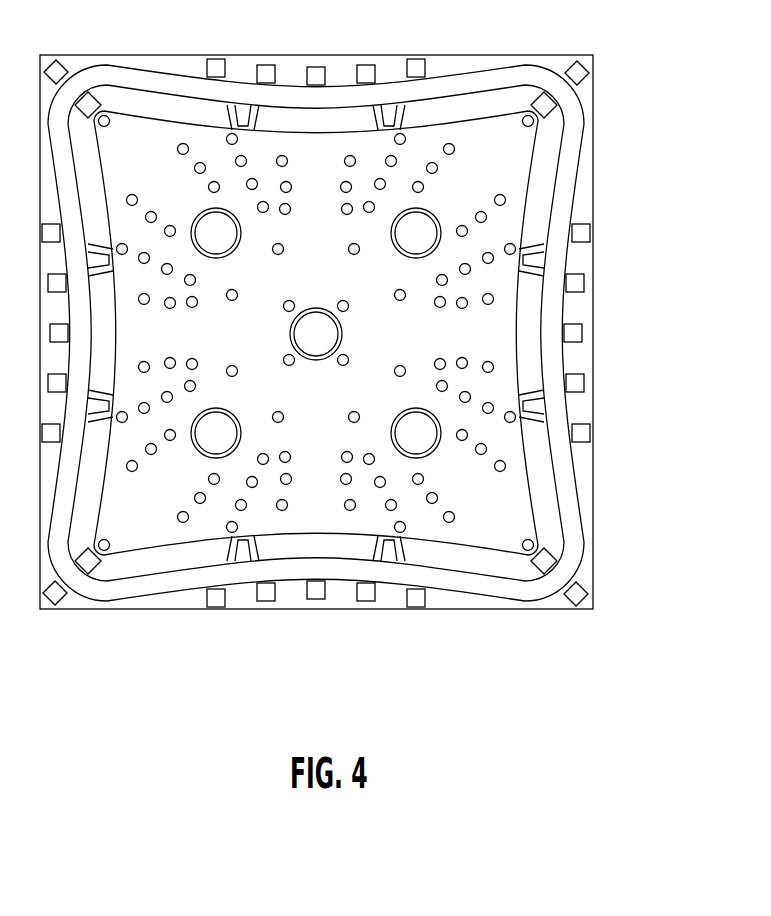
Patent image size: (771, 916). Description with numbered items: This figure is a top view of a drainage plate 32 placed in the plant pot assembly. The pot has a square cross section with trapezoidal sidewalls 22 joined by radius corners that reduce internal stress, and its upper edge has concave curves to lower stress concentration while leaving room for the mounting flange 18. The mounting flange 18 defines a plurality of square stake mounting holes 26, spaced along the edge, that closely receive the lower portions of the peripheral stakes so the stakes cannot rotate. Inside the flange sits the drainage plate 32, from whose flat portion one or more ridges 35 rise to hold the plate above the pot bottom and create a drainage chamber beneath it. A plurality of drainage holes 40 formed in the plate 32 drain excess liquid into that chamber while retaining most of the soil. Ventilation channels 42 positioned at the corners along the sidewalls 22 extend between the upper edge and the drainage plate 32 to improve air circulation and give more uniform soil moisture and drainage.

The mounting flange 18 is at (593, 257).
The sidewalls 22 is at (558, 473).
The stake mounting holes 26 is at (582, 382).
The drainage plate 32 is at (478, 533).
The ridges 35 is at (210, 221).
The drainage holes 40 is at (501, 201).
The ventilation channels 42 is at (583, 66).